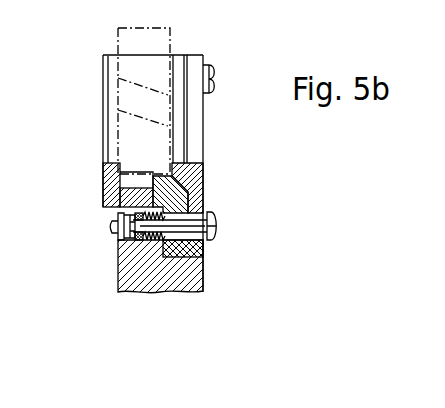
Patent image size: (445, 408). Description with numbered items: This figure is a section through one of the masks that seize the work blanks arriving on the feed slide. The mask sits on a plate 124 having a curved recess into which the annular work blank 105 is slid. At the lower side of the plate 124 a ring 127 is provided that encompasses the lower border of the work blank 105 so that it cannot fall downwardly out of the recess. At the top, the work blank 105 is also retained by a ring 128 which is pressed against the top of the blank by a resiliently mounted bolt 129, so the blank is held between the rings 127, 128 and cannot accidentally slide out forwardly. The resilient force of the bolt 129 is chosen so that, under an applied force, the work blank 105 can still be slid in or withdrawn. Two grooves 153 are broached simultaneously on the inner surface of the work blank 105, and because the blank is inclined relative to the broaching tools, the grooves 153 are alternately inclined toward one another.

The work blank 105 is at (117, 42).
The groove 153 is at (128, 110).
The ring 127 is at (104, 184).
The ring 128 is at (203, 194).
The resiliently mounted bolt 129 is at (215, 221).
The plate 124 is at (195, 269).